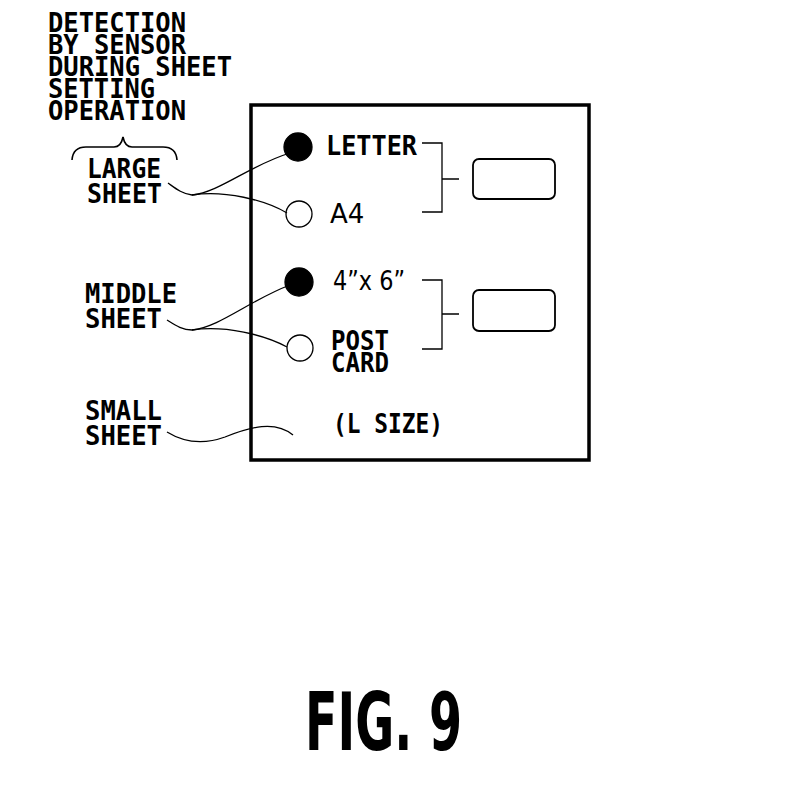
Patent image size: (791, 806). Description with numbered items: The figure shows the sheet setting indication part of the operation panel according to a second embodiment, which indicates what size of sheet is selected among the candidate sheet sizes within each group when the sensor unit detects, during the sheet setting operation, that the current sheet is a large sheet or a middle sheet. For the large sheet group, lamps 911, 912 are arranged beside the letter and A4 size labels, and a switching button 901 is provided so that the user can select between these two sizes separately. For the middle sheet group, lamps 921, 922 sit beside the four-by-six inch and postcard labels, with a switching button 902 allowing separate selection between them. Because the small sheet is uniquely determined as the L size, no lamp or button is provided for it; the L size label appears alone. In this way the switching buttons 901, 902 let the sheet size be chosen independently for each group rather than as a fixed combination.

The switching button 901 is at (555, 178).
The switching button 902 is at (555, 311).
The lamp 911 is at (300, 133).
The lamp 912 is at (296, 226).
The lamp 921 is at (293, 268).
The lamp 922 is at (292, 360).